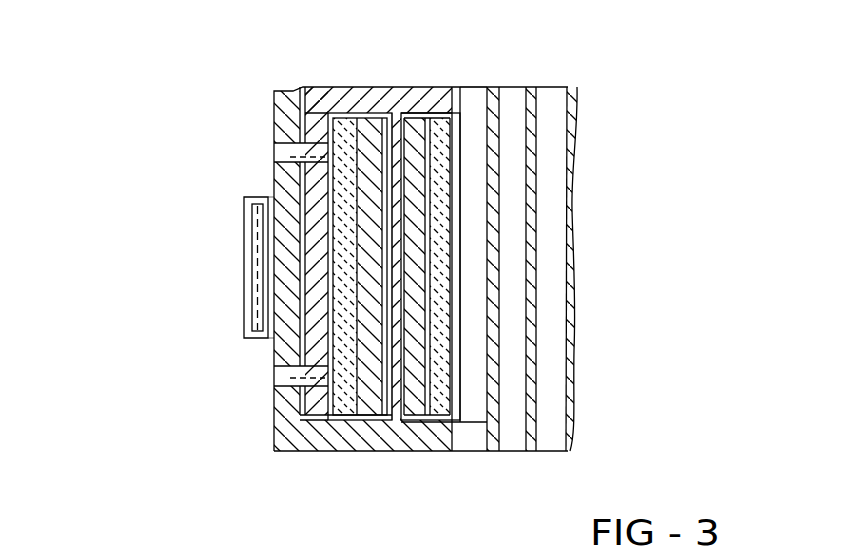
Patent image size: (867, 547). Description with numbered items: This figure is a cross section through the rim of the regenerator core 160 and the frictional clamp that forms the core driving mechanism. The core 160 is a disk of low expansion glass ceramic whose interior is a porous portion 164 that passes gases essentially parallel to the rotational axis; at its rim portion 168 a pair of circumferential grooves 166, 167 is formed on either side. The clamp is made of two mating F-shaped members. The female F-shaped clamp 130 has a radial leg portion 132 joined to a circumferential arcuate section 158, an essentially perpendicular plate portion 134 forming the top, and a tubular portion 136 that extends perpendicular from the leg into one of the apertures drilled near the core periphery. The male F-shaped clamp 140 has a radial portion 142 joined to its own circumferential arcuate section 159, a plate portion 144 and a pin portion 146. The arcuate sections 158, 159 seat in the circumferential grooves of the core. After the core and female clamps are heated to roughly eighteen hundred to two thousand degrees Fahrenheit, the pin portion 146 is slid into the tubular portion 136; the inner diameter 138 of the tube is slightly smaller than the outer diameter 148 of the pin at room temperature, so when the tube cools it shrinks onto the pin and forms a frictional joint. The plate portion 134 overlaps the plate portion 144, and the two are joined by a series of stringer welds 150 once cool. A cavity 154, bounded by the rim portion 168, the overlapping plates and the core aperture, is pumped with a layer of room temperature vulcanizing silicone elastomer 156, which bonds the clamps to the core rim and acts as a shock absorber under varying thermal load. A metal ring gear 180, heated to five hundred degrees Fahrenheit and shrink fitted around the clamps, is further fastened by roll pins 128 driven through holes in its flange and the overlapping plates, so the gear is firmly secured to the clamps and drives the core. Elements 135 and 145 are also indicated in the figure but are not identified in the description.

The roll pins 128 is at (277, 150).
The female F-shaped clamp 130 is at (272, 418).
The radial leg portion 132 is at (288, 450).
The plate portion 134 is at (274, 173).
The lower wall portion 135 is at (300, 382).
The tubular portion 136 is at (372, 400).
The inner diameter 138 is at (392, 374).
The male F-shaped clamp 140 is at (329, 86).
The radial portion 142 is at (345, 86).
The plate portion 144 is at (274, 120).
The plate 145 is at (300, 150).
The pin portion 146 is at (385, 125).
The outer diameter 148 is at (406, 150).
The stringer welds 150 is at (274, 199).
The cavity 154 is at (328, 418).
The layer of silicone elastomer 156 is at (433, 123).
The circumferential arcuate section 158 is at (466, 440).
The circumferential arcuate section 159 is at (497, 105).
The regenerator core 160 is at (552, 87).
The porous portion 164 is at (505, 108).
The circumferential groove 166 is at (431, 419).
The circumferential groove 167 is at (470, 98).
The rim portion 168 is at (428, 284).
The ring gear 180 is at (244, 262).